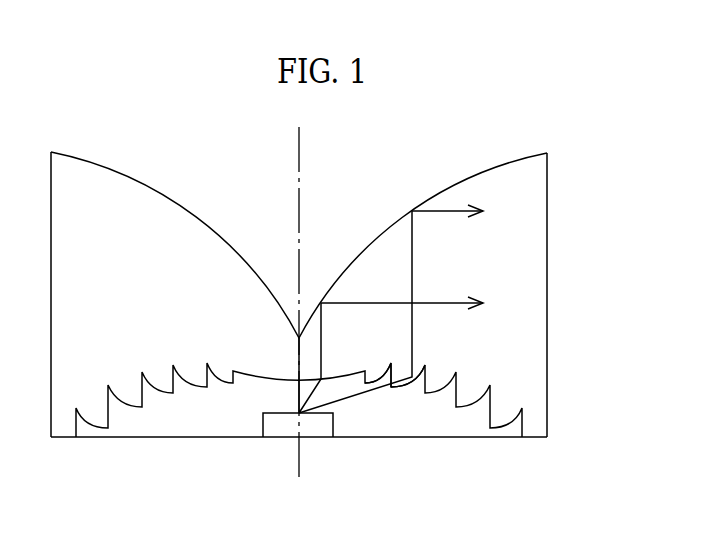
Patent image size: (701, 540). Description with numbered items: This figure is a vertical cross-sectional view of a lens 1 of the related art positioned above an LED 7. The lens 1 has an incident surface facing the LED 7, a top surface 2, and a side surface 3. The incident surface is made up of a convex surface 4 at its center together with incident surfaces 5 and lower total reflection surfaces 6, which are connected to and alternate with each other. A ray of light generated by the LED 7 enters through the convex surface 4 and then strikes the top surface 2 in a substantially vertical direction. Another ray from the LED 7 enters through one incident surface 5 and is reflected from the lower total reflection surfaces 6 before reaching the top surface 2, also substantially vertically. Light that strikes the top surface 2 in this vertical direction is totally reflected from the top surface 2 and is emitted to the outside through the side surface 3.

The lens 1 is at (131, 151).
The top surface 2 is at (200, 221).
The side surface 3 is at (547, 327).
The convex surface 4 is at (264, 377).
The incident surfaces 5 is at (392, 368).
The lower total reflection surfaces 6 is at (405, 385).
The LED 7 is at (320, 430).